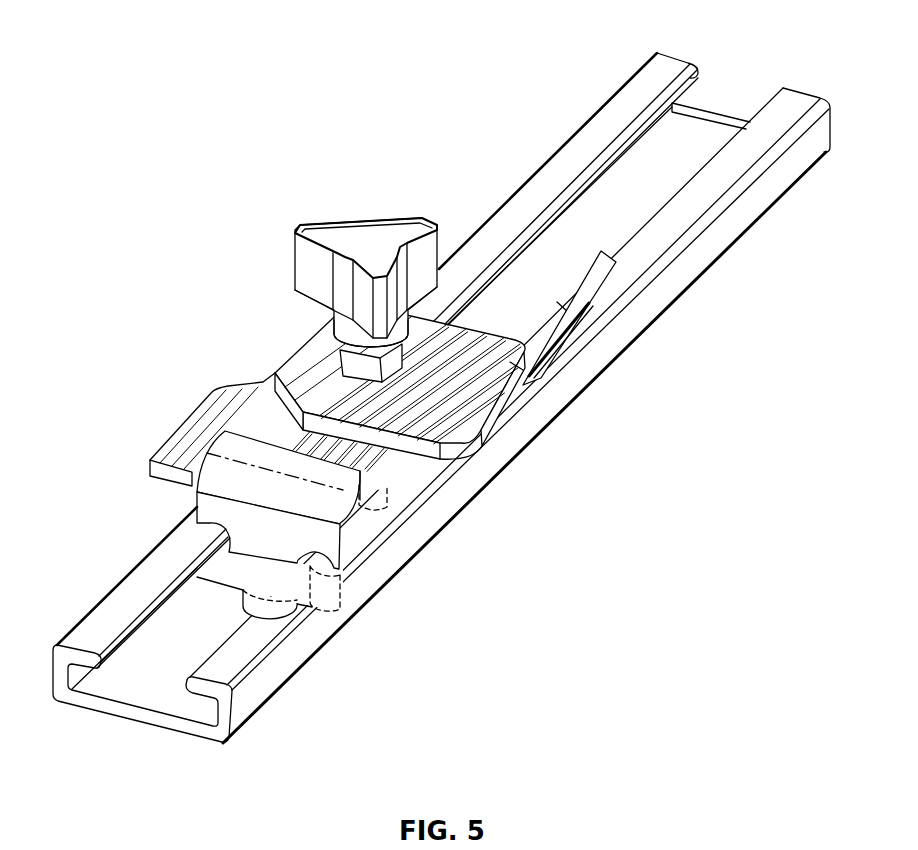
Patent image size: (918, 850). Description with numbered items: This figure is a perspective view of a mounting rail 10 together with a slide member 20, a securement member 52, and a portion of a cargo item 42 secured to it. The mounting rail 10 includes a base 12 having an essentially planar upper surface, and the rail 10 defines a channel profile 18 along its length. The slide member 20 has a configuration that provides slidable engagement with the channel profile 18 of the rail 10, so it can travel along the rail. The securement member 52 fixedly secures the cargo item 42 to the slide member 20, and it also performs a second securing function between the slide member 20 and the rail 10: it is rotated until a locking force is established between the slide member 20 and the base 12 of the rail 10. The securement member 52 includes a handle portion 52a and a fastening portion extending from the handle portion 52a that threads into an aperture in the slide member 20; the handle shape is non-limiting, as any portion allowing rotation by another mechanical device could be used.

The mounting rail 10 is at (232, 710).
The base 12 is at (133, 690).
The channel profile 18 is at (662, 153).
The slide member 20 is at (222, 487).
The cargo item 42 is at (583, 275).
The securement member 52 is at (333, 327).
The handle portion 52a is at (345, 238).